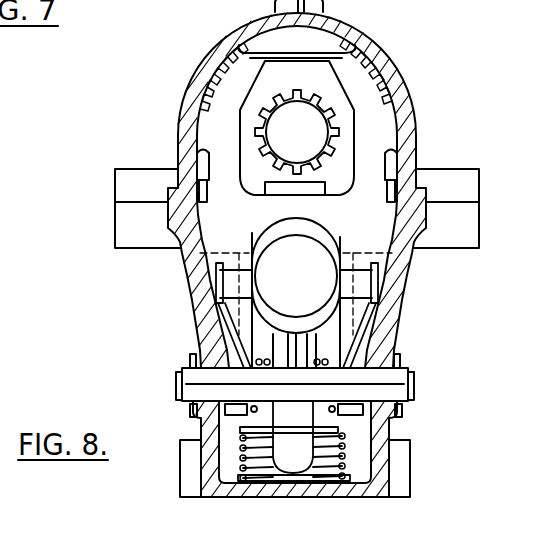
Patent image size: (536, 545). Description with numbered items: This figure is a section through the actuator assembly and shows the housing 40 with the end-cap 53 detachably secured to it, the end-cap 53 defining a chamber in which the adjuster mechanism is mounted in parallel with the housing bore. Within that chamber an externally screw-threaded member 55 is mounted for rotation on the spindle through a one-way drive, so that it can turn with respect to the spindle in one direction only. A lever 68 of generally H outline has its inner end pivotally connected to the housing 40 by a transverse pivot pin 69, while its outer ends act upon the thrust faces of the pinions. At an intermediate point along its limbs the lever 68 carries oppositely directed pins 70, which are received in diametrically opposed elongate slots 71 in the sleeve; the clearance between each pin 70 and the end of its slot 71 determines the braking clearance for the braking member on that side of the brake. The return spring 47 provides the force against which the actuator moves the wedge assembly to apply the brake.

The housing 40 is at (363, 487).
The return spring 47 is at (243, 472).
The end-cap 53 is at (405, 95).
The externally screw-threaded member 55 is at (328, 100).
The lever 68 is at (357, 228).
The transverse pivot pin 69 is at (383, 382).
The pins 70 is at (220, 303).
The elongate slots 71 is at (216, 262).